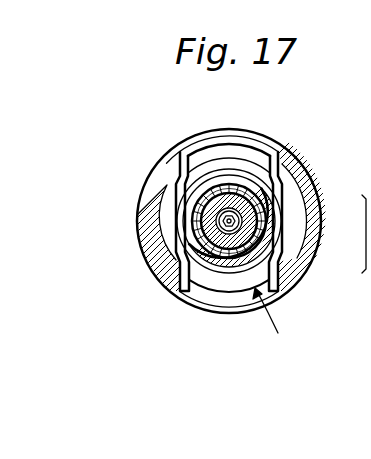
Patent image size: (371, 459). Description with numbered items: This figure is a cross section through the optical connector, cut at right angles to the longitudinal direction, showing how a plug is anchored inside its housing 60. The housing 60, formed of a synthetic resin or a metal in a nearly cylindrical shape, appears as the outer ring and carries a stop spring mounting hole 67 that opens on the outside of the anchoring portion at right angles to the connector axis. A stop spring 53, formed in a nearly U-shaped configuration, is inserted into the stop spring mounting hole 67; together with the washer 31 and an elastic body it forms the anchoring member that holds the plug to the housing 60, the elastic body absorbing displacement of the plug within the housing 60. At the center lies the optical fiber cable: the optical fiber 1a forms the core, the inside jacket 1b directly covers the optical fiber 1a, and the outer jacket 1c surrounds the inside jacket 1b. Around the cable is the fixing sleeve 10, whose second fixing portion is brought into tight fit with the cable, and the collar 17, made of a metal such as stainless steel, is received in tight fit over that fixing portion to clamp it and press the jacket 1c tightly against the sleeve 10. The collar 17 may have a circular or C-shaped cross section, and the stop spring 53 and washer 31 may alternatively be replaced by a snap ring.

The housing 60 is at (298, 174).
The stop spring 53 is at (228, 138).
The washer 31 is at (203, 166).
The optical fiber 1a is at (248, 204).
The inside jacket 1b is at (263, 232).
The jacket 1c is at (260, 250).
The second collar 17 is at (207, 290).
The fixing sleeve 10 is at (231, 289).
The stop spring mounting hole 67 is at (271, 321).